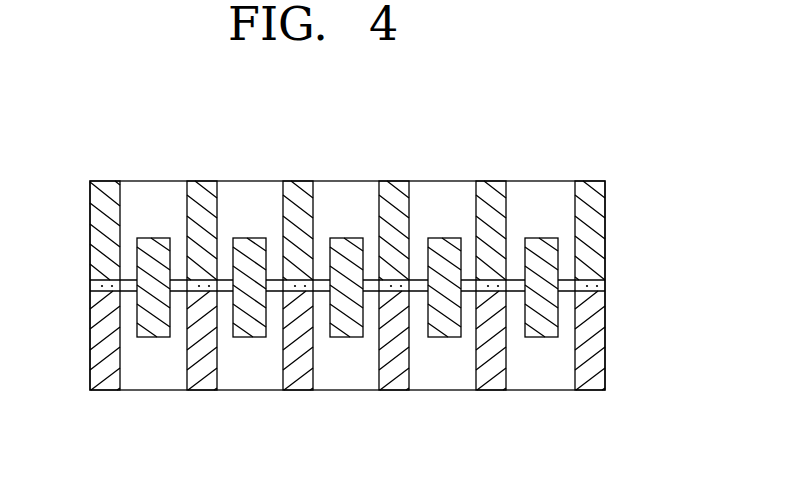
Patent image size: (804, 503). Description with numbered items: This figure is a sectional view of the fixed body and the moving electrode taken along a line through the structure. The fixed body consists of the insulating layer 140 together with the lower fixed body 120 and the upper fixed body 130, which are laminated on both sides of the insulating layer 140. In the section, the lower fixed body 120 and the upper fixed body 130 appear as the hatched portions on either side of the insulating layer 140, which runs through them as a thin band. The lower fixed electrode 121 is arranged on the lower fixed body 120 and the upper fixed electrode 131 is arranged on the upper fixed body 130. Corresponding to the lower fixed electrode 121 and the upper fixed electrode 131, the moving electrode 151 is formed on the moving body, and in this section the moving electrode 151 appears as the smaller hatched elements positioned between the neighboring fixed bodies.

The lower fixed body 120 is at (401, 399).
The lower fixed electrode 121 is at (590, 370).
The upper fixed body 130 is at (399, 172).
The upper fixed electrode 131 is at (582, 180).
The insulating layer 140 is at (593, 285).
The moving electrode 151 is at (342, 332).